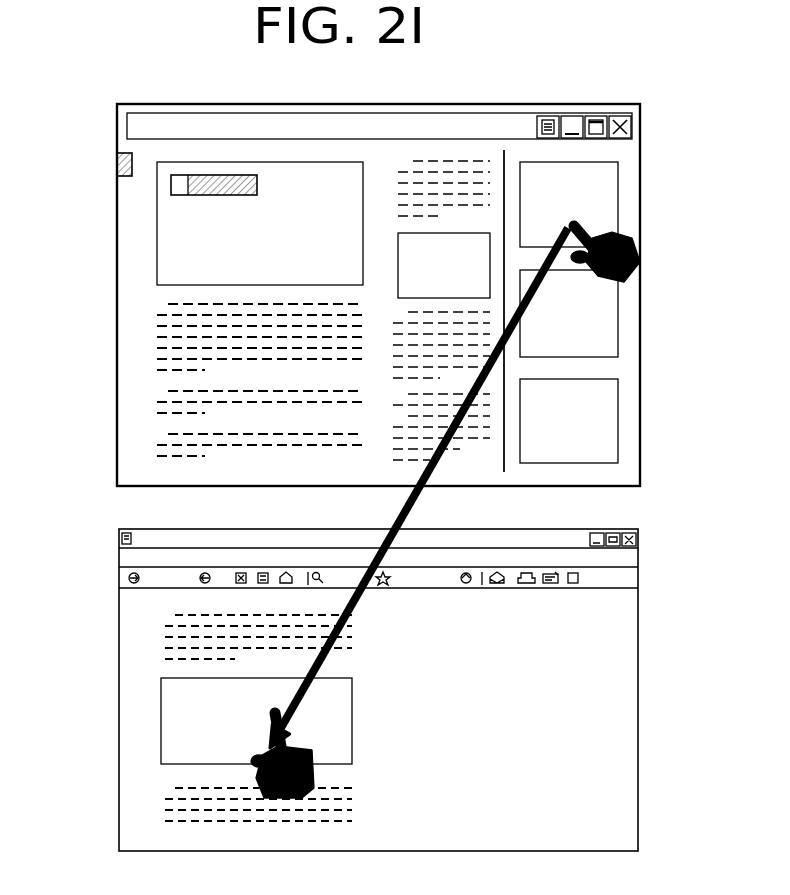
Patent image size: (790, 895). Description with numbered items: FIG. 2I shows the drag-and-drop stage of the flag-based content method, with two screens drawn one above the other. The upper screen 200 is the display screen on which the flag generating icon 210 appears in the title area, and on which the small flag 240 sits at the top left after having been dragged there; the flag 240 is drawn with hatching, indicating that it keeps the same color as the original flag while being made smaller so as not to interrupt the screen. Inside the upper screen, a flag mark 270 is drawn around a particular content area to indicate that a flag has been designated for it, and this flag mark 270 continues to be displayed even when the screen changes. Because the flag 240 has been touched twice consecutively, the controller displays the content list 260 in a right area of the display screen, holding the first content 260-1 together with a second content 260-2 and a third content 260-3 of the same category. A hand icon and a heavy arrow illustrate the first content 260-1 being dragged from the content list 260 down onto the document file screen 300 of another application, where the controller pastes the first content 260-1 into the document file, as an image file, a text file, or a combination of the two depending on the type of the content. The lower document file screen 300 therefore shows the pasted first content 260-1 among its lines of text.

The first display/application window 200 is at (131, 438).
The flag generating icon 210 is at (542, 113).
The flag 240 is at (117, 156).
The content list 260 is at (626, 163).
The first content 260-1 is at (620, 207).
The content 2 item 260-2 is at (618, 305).
The content 3 item 260-3 is at (618, 400).
The flag mark 270 is at (212, 175).
The document file screen 300 is at (128, 768).